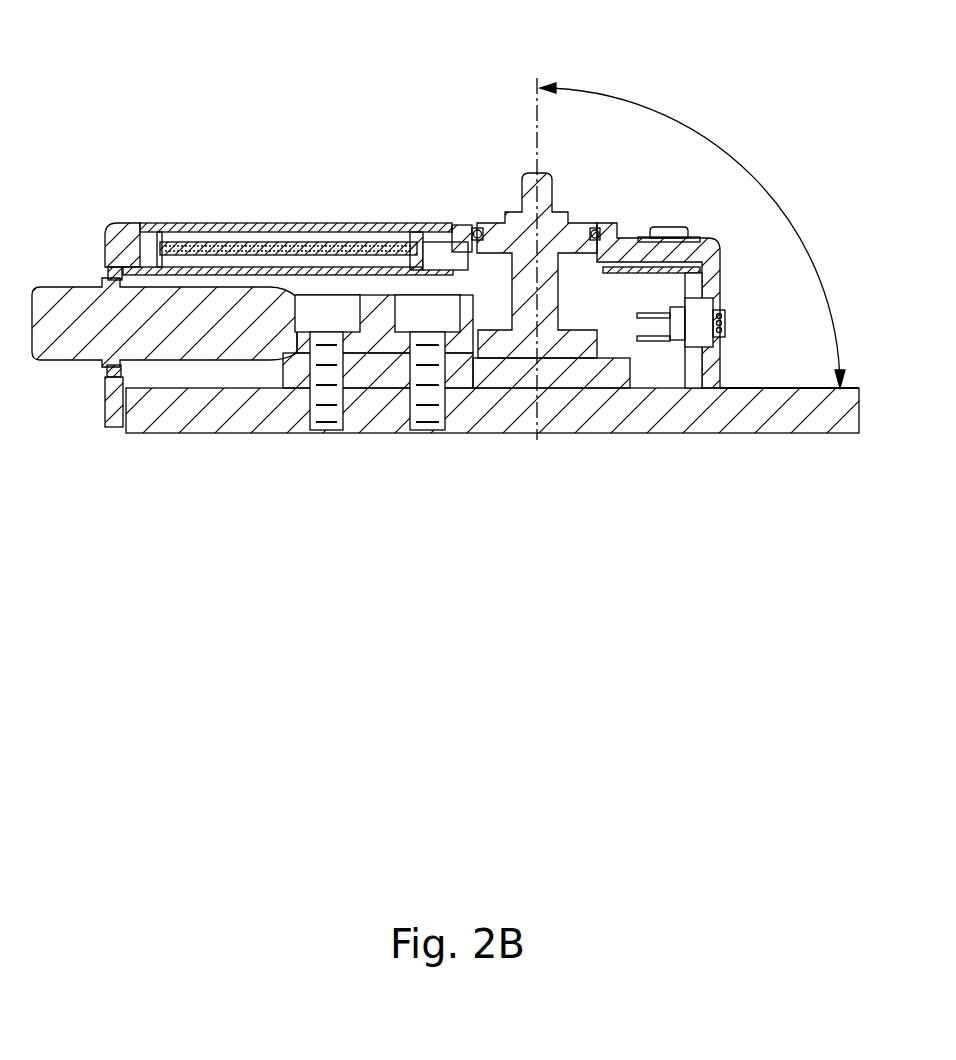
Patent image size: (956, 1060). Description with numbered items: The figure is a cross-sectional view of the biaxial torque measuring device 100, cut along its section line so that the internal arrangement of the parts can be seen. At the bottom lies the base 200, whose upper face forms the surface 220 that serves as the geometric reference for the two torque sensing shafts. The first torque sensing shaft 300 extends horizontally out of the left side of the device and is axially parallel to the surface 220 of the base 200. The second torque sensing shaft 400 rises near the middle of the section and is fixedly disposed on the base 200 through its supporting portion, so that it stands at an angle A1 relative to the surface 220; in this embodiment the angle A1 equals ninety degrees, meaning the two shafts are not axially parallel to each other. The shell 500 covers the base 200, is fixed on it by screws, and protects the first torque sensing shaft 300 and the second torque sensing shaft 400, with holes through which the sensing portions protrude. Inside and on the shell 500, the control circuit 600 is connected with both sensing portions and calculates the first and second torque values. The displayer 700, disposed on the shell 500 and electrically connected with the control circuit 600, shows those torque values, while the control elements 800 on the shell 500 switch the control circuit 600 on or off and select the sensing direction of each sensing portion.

The biaxial torque measuring device 100 is at (126, 32).
The base 200 is at (736, 410).
The surface of the base 220 is at (780, 388).
The first torque sensing shaft 300 is at (72, 340).
The second torque sensing shaft 400 is at (530, 172).
The shell 500 is at (105, 243).
The control circuit 600 is at (440, 257).
The displayer 700 is at (268, 225).
The control elements 800 is at (670, 230).
The angle A1 is at (692, 235).